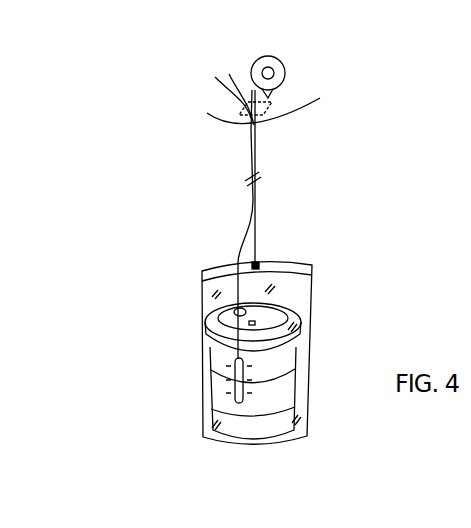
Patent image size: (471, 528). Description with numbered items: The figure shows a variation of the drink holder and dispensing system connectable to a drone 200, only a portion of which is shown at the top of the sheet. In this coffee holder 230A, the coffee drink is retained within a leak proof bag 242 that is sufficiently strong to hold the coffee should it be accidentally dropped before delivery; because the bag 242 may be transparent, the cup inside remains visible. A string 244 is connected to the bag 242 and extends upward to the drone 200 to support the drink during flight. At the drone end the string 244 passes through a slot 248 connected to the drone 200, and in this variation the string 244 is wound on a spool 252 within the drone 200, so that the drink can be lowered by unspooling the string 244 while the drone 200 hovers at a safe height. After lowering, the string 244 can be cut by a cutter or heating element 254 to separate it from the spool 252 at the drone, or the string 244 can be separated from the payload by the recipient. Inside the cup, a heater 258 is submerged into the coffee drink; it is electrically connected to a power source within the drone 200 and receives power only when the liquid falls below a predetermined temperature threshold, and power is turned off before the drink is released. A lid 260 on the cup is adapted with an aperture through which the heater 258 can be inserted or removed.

The drone 200 is at (308, 112).
The coffee holder 230A is at (162, 273).
The bag 242 is at (303, 292).
The string 244 is at (260, 231).
The slot 248 is at (225, 105).
The spool 252 is at (283, 73).
The cutter or heating element 254 is at (275, 97).
The heater 258 is at (238, 392).
The lid 260 is at (230, 311).